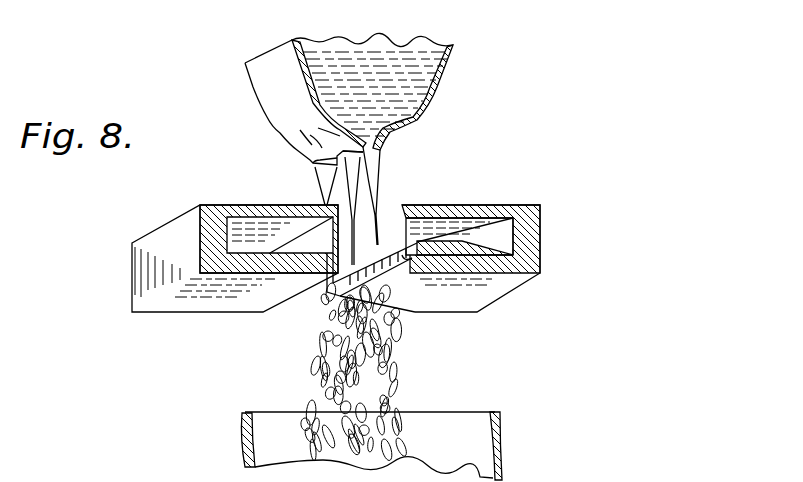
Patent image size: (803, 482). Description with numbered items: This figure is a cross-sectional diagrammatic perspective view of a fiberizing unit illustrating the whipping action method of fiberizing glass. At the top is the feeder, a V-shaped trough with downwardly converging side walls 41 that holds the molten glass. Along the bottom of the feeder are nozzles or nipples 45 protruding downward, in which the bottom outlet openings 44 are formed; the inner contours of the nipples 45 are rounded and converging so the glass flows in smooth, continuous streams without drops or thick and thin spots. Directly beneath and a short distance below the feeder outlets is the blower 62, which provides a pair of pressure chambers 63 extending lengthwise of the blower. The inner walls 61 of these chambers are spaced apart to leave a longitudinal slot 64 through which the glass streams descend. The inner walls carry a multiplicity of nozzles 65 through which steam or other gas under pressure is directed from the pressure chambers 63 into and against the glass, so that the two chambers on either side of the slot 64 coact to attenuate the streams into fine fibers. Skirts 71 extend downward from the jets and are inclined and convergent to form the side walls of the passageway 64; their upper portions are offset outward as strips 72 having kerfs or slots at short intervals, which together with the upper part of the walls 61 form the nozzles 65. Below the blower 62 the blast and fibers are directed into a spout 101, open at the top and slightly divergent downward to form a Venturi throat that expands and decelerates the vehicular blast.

The side walls 41 is at (427, 92).
The bottom outlet openings 44 is at (373, 152).
The nozzles or nipples 45 is at (347, 150).
The inner walls 61 is at (343, 240).
The blower 62 is at (248, 307).
The pressure chambers 63 is at (467, 230).
The longitudinal slot 64 is at (386, 208).
The nozzles 65 is at (420, 233).
The skirts 71 is at (430, 270).
The strips 72 is at (387, 262).
The spouts 101 is at (245, 443).